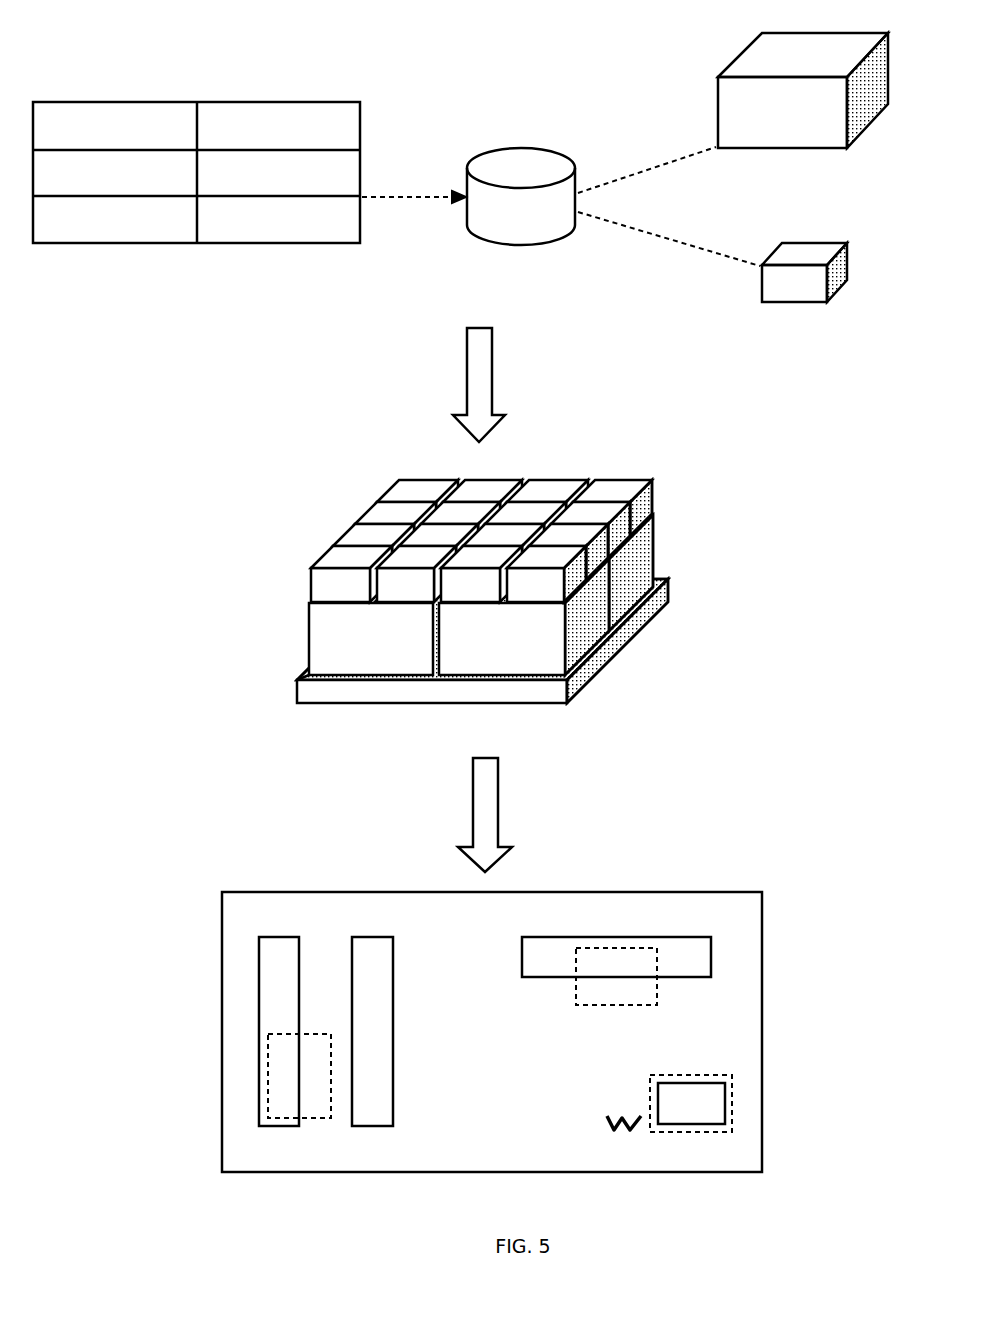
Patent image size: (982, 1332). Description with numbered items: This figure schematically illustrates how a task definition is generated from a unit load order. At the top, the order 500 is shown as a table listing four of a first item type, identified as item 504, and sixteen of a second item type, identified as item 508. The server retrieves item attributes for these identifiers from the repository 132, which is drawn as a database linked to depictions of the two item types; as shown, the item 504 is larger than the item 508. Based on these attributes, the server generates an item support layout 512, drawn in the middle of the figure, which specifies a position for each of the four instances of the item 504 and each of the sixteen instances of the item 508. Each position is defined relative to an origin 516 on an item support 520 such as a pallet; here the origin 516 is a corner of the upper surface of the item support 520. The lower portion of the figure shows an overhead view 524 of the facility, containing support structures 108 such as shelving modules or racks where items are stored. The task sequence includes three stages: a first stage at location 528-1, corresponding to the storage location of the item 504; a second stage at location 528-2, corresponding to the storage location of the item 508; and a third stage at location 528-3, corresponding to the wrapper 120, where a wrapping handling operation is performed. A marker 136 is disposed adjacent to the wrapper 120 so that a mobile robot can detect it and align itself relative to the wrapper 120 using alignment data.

The order 500 is at (184, 97).
The repository 132 is at (503, 225).
The item 504 is at (764, 124).
The item 508 is at (777, 296).
The item support layout 512 is at (218, 642).
The origin 516 is at (297, 681).
The item support 520 is at (548, 695).
The overhead view 524 is at (212, 923).
The support structure 108 is at (250, 985).
The location 528-1 is at (268, 1087).
The location 528-2 is at (657, 997).
The location 528-3 is at (732, 1105).
The wrapper 120 is at (674, 1117).
The marker 136 is at (632, 1132).